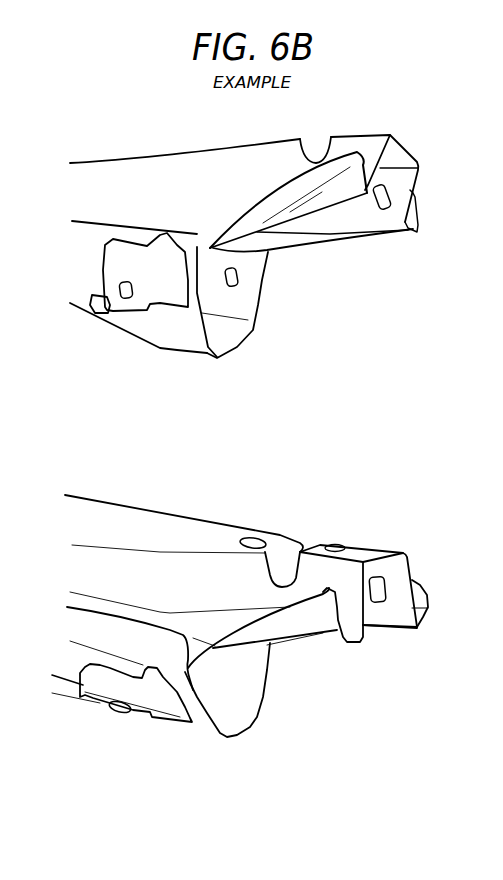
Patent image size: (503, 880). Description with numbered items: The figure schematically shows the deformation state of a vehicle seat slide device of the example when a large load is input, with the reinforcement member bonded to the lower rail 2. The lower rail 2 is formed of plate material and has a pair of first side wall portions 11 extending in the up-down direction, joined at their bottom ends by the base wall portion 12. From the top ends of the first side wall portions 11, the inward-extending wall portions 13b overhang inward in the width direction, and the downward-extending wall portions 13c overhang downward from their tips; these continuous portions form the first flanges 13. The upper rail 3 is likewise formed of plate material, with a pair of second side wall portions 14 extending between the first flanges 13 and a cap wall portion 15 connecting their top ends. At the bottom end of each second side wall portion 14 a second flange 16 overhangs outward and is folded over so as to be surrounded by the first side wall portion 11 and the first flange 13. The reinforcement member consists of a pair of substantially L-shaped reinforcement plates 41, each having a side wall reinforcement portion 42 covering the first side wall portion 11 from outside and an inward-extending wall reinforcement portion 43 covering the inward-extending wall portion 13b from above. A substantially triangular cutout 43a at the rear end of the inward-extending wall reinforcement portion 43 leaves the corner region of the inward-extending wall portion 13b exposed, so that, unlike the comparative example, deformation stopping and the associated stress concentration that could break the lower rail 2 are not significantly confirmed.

The lower rail 2 is at (250, 337).
The upper rail 3 is at (393, 132).
The first side wall portions 11 is at (85, 282).
The base wall portion 12 is at (237, 347).
The first flanges 13 is at (58, 752).
The inward-extending wall portions 13b is at (91, 217).
The downward-extending wall portions 13c is at (112, 640).
The second side wall portions 14 is at (372, 148).
The cap wall portion 15 is at (412, 156).
The second flange 16 is at (337, 173).
The reinforcement plates 41 is at (130, 313).
The side wall reinforcement portion 42 is at (168, 300).
The inward-extending wall reinforcement portion 43 is at (123, 250).
The cutout 43a is at (187, 248).